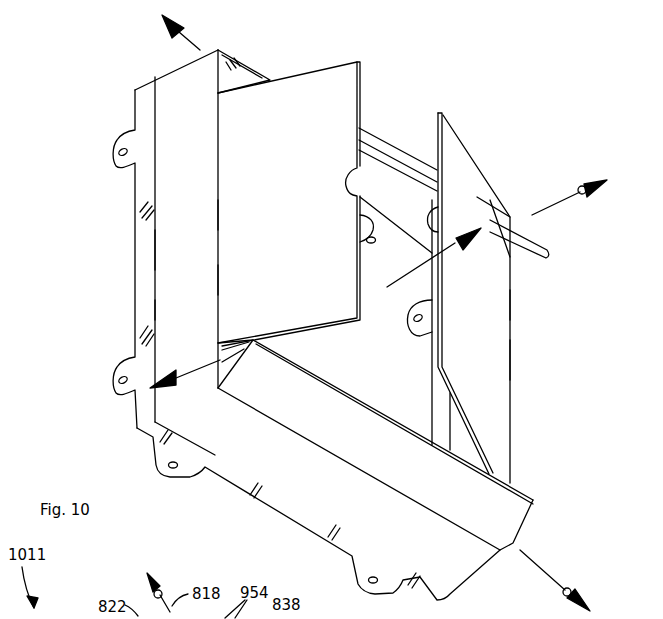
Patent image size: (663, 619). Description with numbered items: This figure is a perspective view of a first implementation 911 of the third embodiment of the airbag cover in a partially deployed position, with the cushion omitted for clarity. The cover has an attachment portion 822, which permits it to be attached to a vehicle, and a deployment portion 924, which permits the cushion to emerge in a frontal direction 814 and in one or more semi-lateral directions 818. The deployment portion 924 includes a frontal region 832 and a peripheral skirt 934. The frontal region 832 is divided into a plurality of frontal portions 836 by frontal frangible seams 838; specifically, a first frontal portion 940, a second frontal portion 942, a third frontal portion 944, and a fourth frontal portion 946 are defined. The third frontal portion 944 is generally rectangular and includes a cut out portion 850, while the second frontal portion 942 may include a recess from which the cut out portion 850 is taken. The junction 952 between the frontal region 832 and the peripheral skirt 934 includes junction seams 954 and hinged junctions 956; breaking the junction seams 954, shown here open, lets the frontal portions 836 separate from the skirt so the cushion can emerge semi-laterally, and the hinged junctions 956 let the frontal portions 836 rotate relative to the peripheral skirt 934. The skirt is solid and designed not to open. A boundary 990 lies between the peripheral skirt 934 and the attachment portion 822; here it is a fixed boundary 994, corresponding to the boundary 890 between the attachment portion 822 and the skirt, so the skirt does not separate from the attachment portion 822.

The first implementation 911 is at (48, 72).
The attachment portion 822 is at (140, 88).
The deployment portion 924 is at (165, 72).
The second frontal portion 942 is at (220, 154).
The junction 952 is at (220, 215).
The hinged junctions 956 is at (220, 282).
The peripheral skirt 934 is at (158, 250).
The boundary 990 is at (155, 308).
The fixed boundary 994 is at (150, 182).
The junction seams 954 is at (222, 77).
The semi-lateral directions 818 is at (200, 28).
The frontal frangible seams 838 is at (437, 137).
The cut out portion 850 is at (440, 220).
The first frontal portion 940 is at (510, 217).
The frontal direction 814 is at (448, 262).
The frontal region 832 is at (510, 306).
The third frontal portion 944 is at (505, 360).
The frontal portions 836 is at (348, 410).
The boundary 890 is at (222, 493).
The fourth frontal portion 946 is at (327, 437).